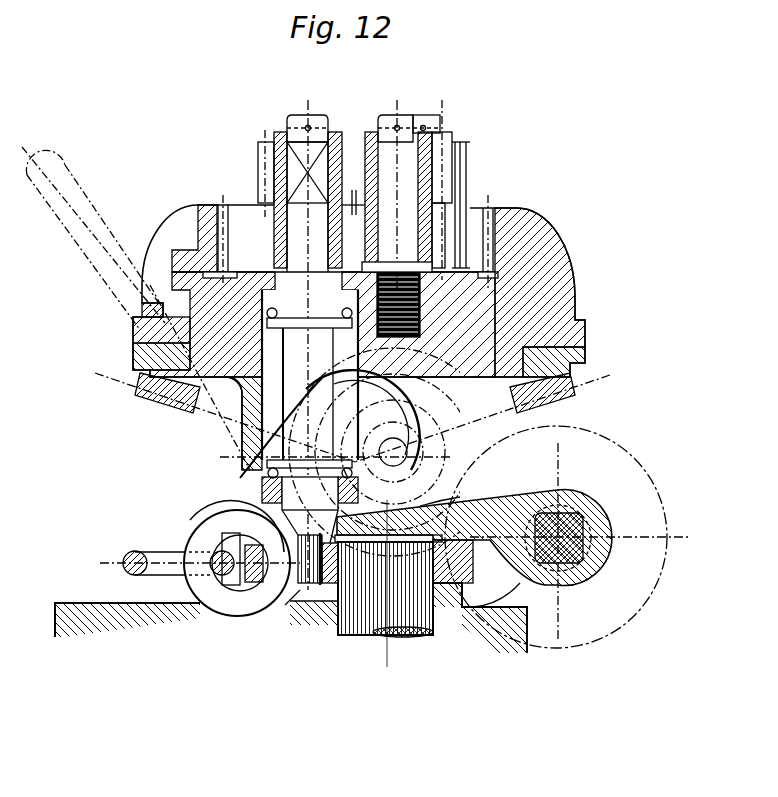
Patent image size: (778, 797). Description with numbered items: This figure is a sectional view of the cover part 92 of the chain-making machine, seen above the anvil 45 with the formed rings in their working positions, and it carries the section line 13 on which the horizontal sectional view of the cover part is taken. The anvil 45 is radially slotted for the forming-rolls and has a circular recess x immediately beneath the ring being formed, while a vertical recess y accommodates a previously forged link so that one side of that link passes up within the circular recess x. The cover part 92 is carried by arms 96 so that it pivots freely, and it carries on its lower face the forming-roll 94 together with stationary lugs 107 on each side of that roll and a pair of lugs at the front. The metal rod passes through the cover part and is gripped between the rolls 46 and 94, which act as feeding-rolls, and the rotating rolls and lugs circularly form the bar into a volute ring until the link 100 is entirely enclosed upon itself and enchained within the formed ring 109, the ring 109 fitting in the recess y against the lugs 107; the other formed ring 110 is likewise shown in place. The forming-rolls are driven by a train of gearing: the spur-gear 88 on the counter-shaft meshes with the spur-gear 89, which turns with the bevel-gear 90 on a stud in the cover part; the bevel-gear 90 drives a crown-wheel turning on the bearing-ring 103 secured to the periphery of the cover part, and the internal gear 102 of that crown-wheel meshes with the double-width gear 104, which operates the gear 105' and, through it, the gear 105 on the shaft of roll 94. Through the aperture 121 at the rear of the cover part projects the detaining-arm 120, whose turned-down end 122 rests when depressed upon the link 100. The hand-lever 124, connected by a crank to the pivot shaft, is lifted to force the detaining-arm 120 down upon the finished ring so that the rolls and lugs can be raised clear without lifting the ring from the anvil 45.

The section line 13 is at (391, 554).
The anvil 45 is at (512, 628).
The forming-roll 46 is at (342, 624).
The spur-gear 88 is at (641, 467).
The spur-gear 89 is at (487, 435).
The bevel-gear 90 is at (412, 413).
The cover part 92 is at (240, 402).
The forming-roll 94 is at (300, 353).
The arms 96 is at (494, 500).
The link 100 is at (233, 588).
The internal gear 102 is at (502, 224).
The bearing-ring 103 is at (153, 392).
The double-width gear 104 is at (452, 160).
The gear 105 is at (248, 171).
The gear 105' is at (417, 189).
The stationary lug 107 is at (300, 592).
The formed ring 109 is at (213, 588).
The formed ring 110 is at (156, 553).
The detaining-arm 120 is at (505, 510).
The aperture 121 is at (421, 508).
The turned-down end 122 is at (303, 608).
The hand-lever 124 is at (67, 200).
The circular recess x is at (253, 592).
The vertical recess y is at (240, 594).